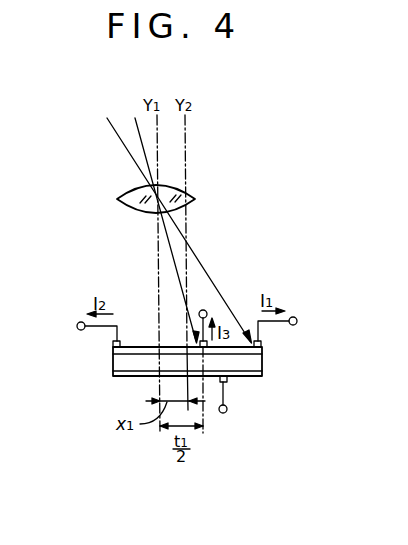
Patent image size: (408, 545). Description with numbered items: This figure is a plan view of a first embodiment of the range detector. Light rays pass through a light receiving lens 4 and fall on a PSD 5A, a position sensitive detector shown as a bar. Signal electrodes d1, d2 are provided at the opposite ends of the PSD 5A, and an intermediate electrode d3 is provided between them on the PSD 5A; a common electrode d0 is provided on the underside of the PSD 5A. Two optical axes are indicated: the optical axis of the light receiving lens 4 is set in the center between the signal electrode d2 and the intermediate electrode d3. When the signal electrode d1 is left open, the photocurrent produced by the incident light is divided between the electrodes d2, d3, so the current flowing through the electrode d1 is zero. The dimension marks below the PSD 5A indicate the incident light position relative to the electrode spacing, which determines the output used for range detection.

The light receiving lens 4 is at (133, 206).
The PSD 5A is at (252, 363).
The common electrode d0 is at (224, 406).
The signal electrode d1 is at (278, 334).
The signal electrode d2 is at (96, 338).
The intermediate electrode d3 is at (201, 320).